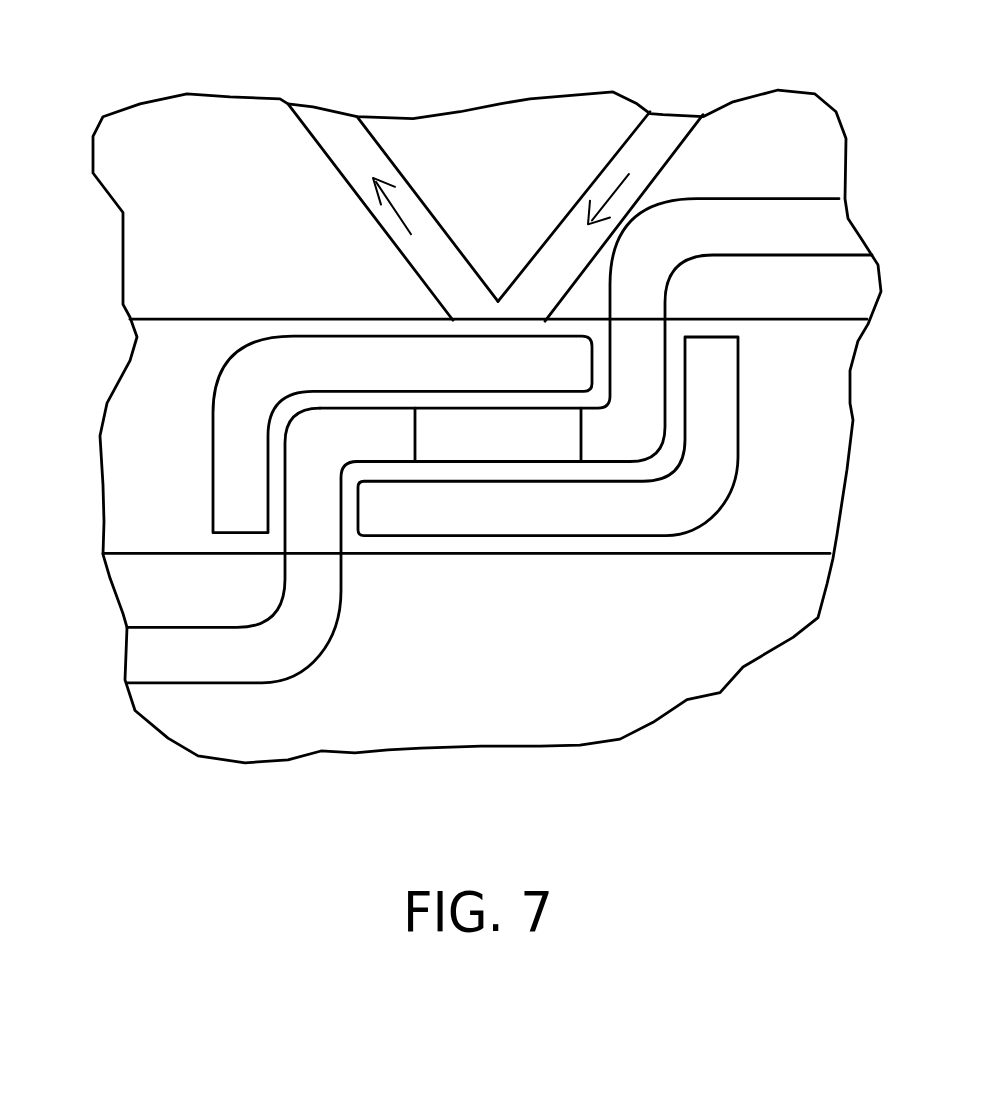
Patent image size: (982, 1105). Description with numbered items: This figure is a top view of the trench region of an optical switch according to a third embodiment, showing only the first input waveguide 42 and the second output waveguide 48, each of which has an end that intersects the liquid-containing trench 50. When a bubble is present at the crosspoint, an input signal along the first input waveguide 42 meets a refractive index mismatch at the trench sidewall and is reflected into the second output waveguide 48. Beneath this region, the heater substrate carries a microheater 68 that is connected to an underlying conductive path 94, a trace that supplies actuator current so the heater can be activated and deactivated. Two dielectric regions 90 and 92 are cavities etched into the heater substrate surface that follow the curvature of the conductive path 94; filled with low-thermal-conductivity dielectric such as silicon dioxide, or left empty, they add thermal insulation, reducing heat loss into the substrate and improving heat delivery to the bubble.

The first input waveguide 42 is at (660, 122).
The second output waveguide 48 is at (347, 133).
The trench 50 is at (800, 555).
The microheater 68 is at (583, 428).
The dielectric-filled cavity 90 is at (236, 460).
The dielectric-filled cavity 92 is at (375, 525).
The conductive path 94 is at (167, 665).